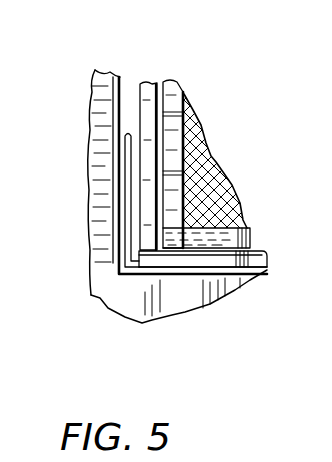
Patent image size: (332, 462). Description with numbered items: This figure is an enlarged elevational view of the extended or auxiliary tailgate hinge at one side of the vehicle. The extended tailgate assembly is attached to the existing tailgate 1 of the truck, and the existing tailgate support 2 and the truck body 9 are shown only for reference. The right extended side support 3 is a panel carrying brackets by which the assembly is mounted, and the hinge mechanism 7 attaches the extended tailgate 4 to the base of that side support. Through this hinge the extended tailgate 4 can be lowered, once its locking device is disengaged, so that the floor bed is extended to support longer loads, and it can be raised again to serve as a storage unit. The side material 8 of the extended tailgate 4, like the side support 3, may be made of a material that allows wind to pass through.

The existing tailgate 1 is at (215, 260).
The existing tailgate support 2 is at (125, 196).
The right extended side support 3 is at (152, 91).
The extended tailgate 4 is at (186, 98).
The hinge mechanism 7 is at (183, 246).
The side material 8 is at (222, 172).
The truck body 9 is at (98, 163).